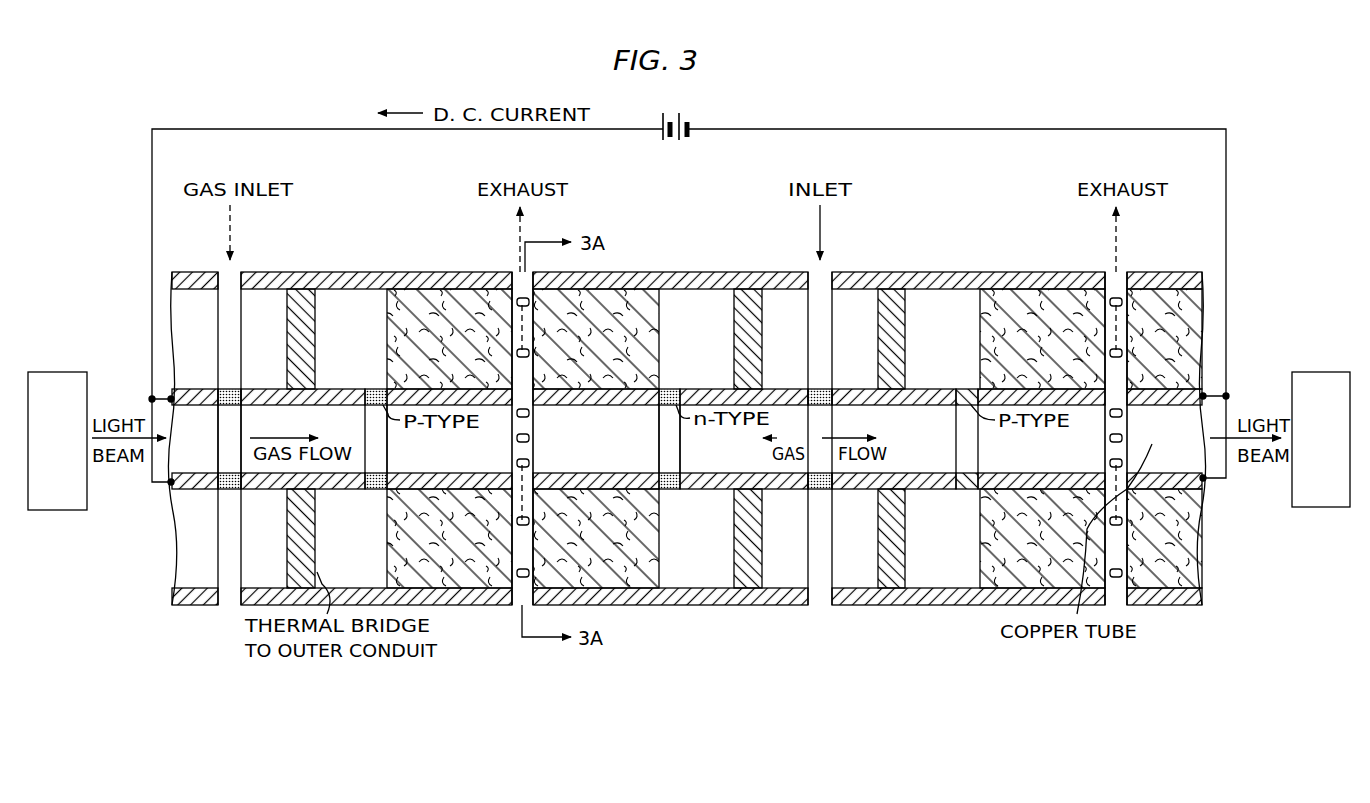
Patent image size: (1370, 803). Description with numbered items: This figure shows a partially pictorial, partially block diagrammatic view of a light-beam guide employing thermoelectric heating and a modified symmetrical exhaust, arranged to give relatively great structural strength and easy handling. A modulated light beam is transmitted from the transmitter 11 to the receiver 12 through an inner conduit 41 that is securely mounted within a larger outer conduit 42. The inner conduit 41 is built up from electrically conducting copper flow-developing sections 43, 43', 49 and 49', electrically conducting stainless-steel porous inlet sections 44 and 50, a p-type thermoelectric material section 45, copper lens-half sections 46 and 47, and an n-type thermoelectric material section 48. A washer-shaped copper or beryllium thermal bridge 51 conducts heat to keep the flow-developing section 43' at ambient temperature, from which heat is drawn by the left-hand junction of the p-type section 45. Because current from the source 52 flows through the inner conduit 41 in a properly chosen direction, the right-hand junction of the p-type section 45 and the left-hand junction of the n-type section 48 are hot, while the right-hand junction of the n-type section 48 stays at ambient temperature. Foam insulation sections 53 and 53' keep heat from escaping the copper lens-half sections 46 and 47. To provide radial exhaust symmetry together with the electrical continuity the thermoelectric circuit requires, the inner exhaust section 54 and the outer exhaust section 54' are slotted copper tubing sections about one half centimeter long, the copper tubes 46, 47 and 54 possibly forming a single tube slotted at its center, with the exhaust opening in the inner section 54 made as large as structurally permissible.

The transmitter 11 is at (56, 372).
The receiver 12 is at (1312, 372).
The inner conduit 41 is at (278, 431).
The outer conduit 42 is at (358, 272).
The flow-developing section 43 is at (200, 411).
The flow-developing section 43' is at (258, 414).
The porous inlet section 44 is at (230, 389).
The p-type thermoelectric material section 45 is at (378, 389).
The copper lens-half section 46 is at (499, 407).
The copper lens-half section 47 is at (634, 405).
The n-type thermoelectric material section 48 is at (668, 389).
The flow-developing section 49 is at (701, 439).
The flow-developing section 49' is at (936, 439).
The porous inlet section 50 is at (823, 405).
The thermal bridge 51 is at (315, 342).
The source 52 is at (678, 144).
The foam insulation section 53 is at (775, 438).
The foam insulation section 53' is at (696, 339).
The inner exhaust section 54 is at (819, 382).
The outer exhaust section 54' is at (819, 547).